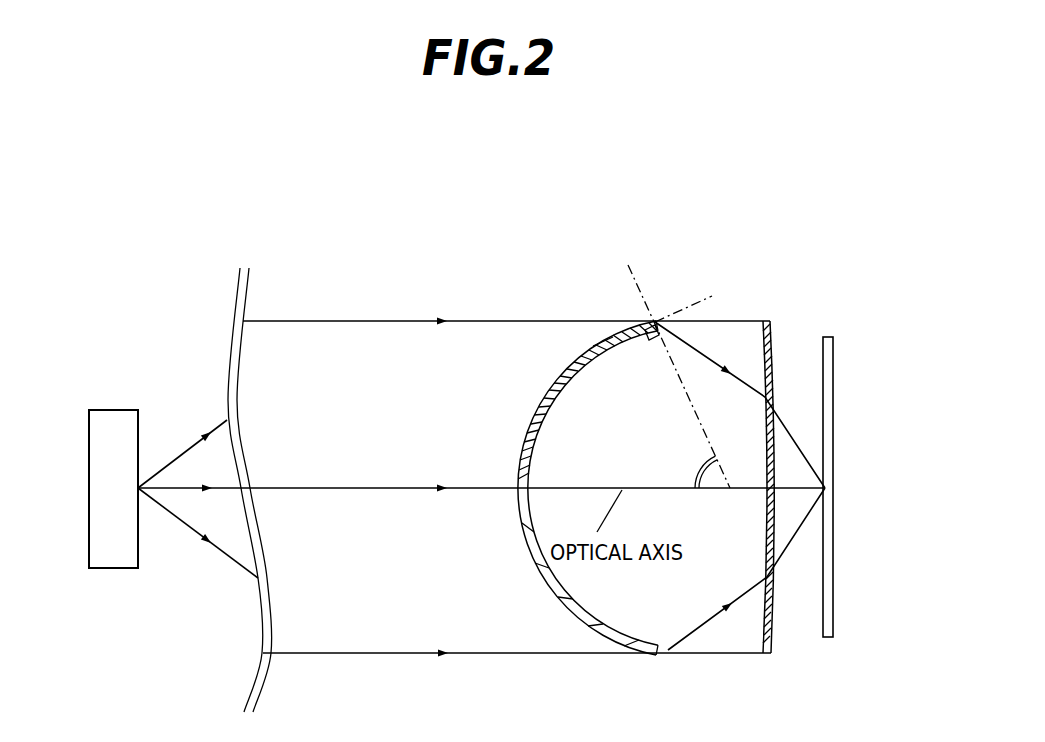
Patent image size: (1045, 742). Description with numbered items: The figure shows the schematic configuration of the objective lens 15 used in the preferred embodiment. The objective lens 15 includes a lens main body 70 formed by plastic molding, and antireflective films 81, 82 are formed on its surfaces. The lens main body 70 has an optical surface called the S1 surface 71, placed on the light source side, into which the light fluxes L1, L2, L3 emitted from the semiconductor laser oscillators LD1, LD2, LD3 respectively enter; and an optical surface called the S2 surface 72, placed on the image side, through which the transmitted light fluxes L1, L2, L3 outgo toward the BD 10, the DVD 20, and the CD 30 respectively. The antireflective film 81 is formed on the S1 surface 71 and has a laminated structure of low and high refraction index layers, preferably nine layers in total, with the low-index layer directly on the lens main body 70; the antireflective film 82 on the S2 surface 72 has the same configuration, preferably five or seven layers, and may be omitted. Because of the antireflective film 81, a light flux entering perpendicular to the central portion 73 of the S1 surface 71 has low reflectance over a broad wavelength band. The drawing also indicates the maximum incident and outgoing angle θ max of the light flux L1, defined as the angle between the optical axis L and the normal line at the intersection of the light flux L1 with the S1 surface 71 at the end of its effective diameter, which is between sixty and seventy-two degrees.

The objective lens 15 is at (661, 459).
The lens main body 70 is at (615, 490).
The optical surface (S1 surface) 71 is at (582, 613).
The optical surface (S2 surface) 72 is at (809, 522).
The central portion 73 is at (512, 496).
The antireflective film 81 is at (532, 423).
The antireflective film 82 is at (770, 613).
The BD 10 is at (854, 451).
The DVD 20 is at (854, 451).
The CD 30 is at (830, 337).
The optical axis L is at (273, 487).
The light flux L1 is at (481, 454).
The light flux L2 is at (481, 454).
The light flux L3 is at (382, 320).
The semiconductor laser oscillator LD1 is at (135, 456).
The semiconductor laser oscillator LD2 is at (135, 456).
The semiconductor laser oscillator LD3 is at (137, 370).